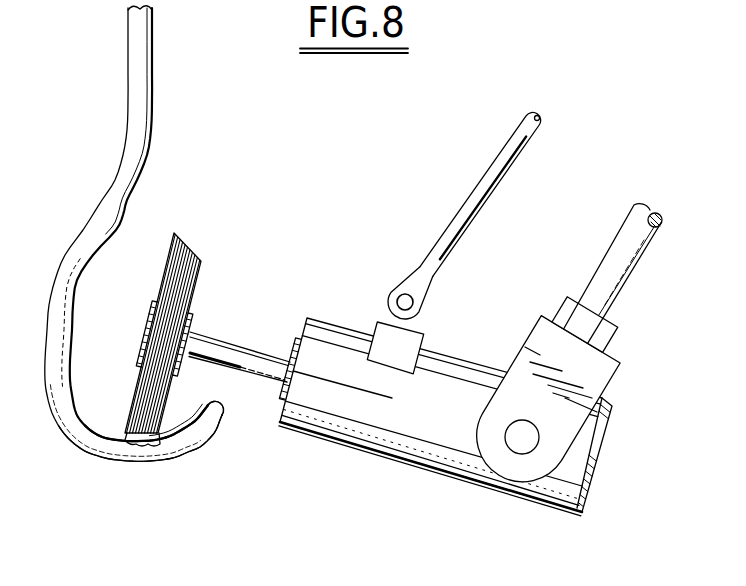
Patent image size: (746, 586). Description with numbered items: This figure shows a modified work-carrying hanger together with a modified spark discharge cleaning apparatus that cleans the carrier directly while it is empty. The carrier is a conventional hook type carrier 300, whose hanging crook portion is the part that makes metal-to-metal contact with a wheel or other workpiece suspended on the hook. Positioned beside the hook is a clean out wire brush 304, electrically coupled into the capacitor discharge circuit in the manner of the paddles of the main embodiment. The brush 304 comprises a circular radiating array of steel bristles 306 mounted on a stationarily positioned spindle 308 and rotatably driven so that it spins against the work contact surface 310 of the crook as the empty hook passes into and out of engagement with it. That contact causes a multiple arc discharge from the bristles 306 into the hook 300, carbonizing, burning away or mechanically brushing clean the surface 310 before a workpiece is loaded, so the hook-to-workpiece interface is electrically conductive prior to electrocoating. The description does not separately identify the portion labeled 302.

The hook type carrier 300 is at (152, 99).
The hook tip 302 is at (184, 455).
The clean out wire brush 304 is at (205, 265).
The steel bristles 306 is at (139, 367).
The spindle 308 is at (239, 347).
The work contact surface 310 is at (129, 449).